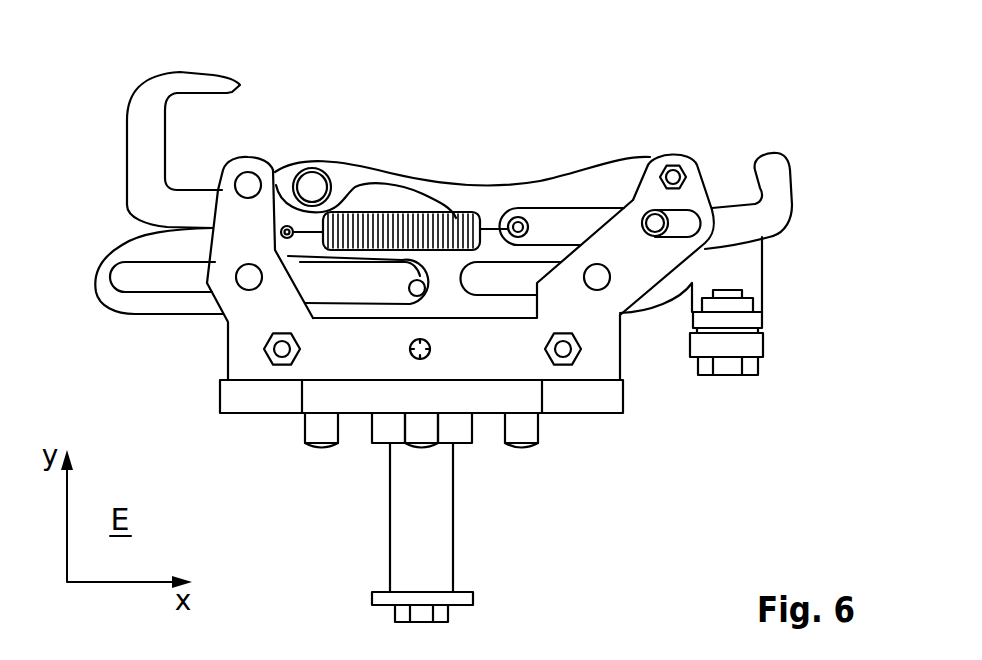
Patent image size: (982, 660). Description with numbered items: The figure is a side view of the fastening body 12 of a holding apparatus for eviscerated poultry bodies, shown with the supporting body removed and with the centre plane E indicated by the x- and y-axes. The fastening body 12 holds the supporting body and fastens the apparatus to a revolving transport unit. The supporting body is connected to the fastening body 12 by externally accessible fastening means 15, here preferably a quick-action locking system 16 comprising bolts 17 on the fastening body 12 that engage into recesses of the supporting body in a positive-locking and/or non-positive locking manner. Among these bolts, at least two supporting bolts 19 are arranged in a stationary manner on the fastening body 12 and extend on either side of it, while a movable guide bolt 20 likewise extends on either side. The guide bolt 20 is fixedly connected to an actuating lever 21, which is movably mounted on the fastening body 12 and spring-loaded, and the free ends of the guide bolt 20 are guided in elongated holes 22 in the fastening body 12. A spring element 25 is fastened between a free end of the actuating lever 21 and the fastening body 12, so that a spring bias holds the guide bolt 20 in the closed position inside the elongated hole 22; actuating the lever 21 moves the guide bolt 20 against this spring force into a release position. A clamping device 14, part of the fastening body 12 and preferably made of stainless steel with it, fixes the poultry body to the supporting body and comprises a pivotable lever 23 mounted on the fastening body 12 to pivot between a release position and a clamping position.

The fastening body 12 is at (758, 91).
The clamping device 14 is at (236, 121).
The fastening means 15 is at (535, 188).
The quick-action locking system 16 is at (807, 140).
The bolts 17 is at (634, 194).
The supporting bolts 19 is at (245, 283).
The movable guide bolt 20 is at (657, 224).
The actuating lever 21 is at (779, 196).
The elongated holes 22 is at (680, 227).
The pivotable lever 23 is at (147, 127).
The spring element 25 is at (408, 215).